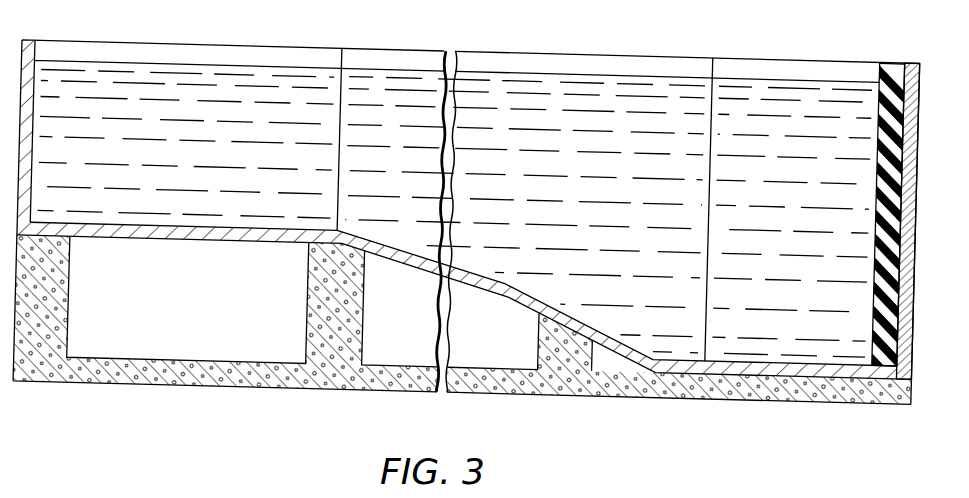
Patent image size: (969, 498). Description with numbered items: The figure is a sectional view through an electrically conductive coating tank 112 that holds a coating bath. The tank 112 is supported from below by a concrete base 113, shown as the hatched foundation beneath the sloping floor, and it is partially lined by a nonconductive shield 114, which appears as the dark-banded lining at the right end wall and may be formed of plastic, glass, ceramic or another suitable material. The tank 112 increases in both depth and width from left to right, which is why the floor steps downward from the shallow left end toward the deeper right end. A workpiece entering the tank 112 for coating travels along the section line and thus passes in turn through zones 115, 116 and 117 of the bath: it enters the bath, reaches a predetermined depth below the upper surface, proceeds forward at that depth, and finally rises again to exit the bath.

The electrically conductive coating tank 112 is at (437, 50).
The concrete base 113 is at (500, 393).
The nonconductive shield 114 is at (897, 63).
The zone 115 is at (207, 163).
The zone 116 is at (590, 173).
The zone 117 is at (799, 180).